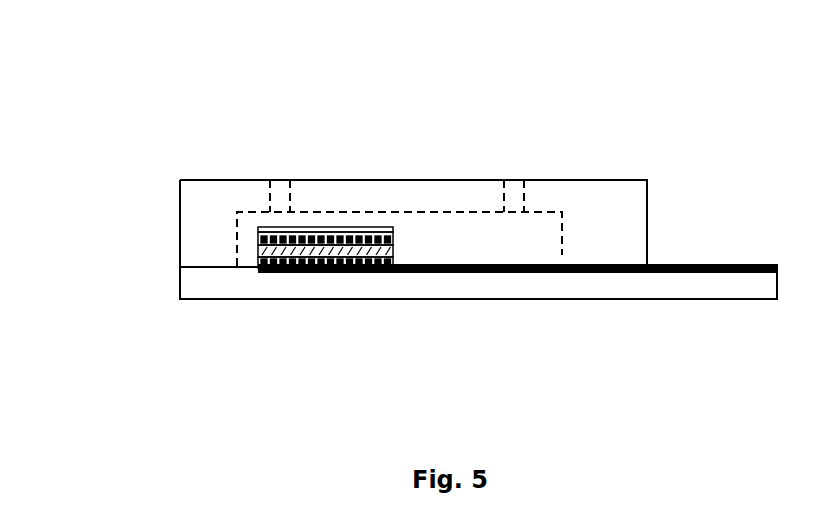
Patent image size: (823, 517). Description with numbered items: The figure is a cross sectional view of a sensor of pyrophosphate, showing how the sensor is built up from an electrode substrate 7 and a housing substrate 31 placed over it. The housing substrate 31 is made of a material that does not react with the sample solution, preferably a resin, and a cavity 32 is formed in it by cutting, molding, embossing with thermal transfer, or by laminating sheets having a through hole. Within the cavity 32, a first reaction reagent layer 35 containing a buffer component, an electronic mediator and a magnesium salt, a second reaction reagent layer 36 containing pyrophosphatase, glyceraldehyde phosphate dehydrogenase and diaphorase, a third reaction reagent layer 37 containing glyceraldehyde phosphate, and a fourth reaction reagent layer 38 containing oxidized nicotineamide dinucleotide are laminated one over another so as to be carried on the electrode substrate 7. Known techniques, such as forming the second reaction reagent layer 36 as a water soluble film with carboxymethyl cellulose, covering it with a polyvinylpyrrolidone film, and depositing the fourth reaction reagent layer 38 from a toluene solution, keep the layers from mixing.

The electrode substrate 7 is at (694, 293).
The housing substrate 31 is at (623, 210).
The cavity 32 is at (530, 247).
The first reaction reagent layer 35 is at (287, 268).
The second reaction reagent layer 36 is at (258, 256).
The third reaction reagent layer 37 is at (268, 227).
The fourth reaction reagent layer 38 is at (377, 228).